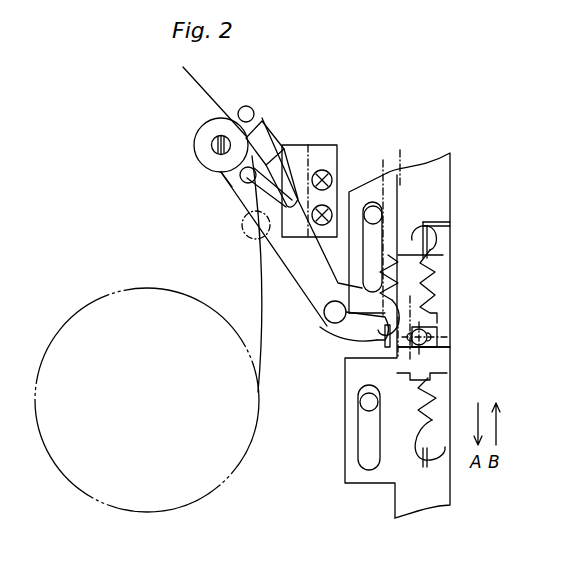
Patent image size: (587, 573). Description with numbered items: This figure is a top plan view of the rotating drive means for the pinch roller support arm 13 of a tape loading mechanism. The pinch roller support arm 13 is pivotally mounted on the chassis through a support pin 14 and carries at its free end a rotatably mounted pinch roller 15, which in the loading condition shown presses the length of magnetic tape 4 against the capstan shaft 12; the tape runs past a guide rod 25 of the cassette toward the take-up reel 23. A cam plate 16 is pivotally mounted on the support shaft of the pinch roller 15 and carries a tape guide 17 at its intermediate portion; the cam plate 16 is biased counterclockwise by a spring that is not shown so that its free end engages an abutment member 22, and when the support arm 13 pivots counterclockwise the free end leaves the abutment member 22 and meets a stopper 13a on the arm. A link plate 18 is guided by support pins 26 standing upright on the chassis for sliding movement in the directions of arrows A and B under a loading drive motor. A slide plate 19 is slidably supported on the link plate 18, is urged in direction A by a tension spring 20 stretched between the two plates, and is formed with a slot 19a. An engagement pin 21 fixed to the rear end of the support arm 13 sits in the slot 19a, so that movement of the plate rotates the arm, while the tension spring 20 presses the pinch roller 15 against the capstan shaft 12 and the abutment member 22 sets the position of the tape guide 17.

The magnetic tape 4 is at (207, 95).
The capstan shaft 12 is at (242, 107).
The pinch roller support arm 13 is at (295, 290).
The stopper 13a is at (264, 118).
The support pin 14 is at (330, 321).
The pinch roller 15 is at (194, 147).
The cam plate 16 is at (236, 178).
The tape guide 17 is at (233, 190).
The link plate 18 is at (452, 170).
The slide plate 19 is at (442, 287).
The slot 19a is at (440, 324).
The tension spring 20 is at (433, 258).
The engagement pin 21 is at (445, 350).
The abutment member 22 is at (292, 145).
The take-up reel 23 is at (240, 463).
The guide rod 25 is at (247, 229).
The support pins 26 is at (373, 208).